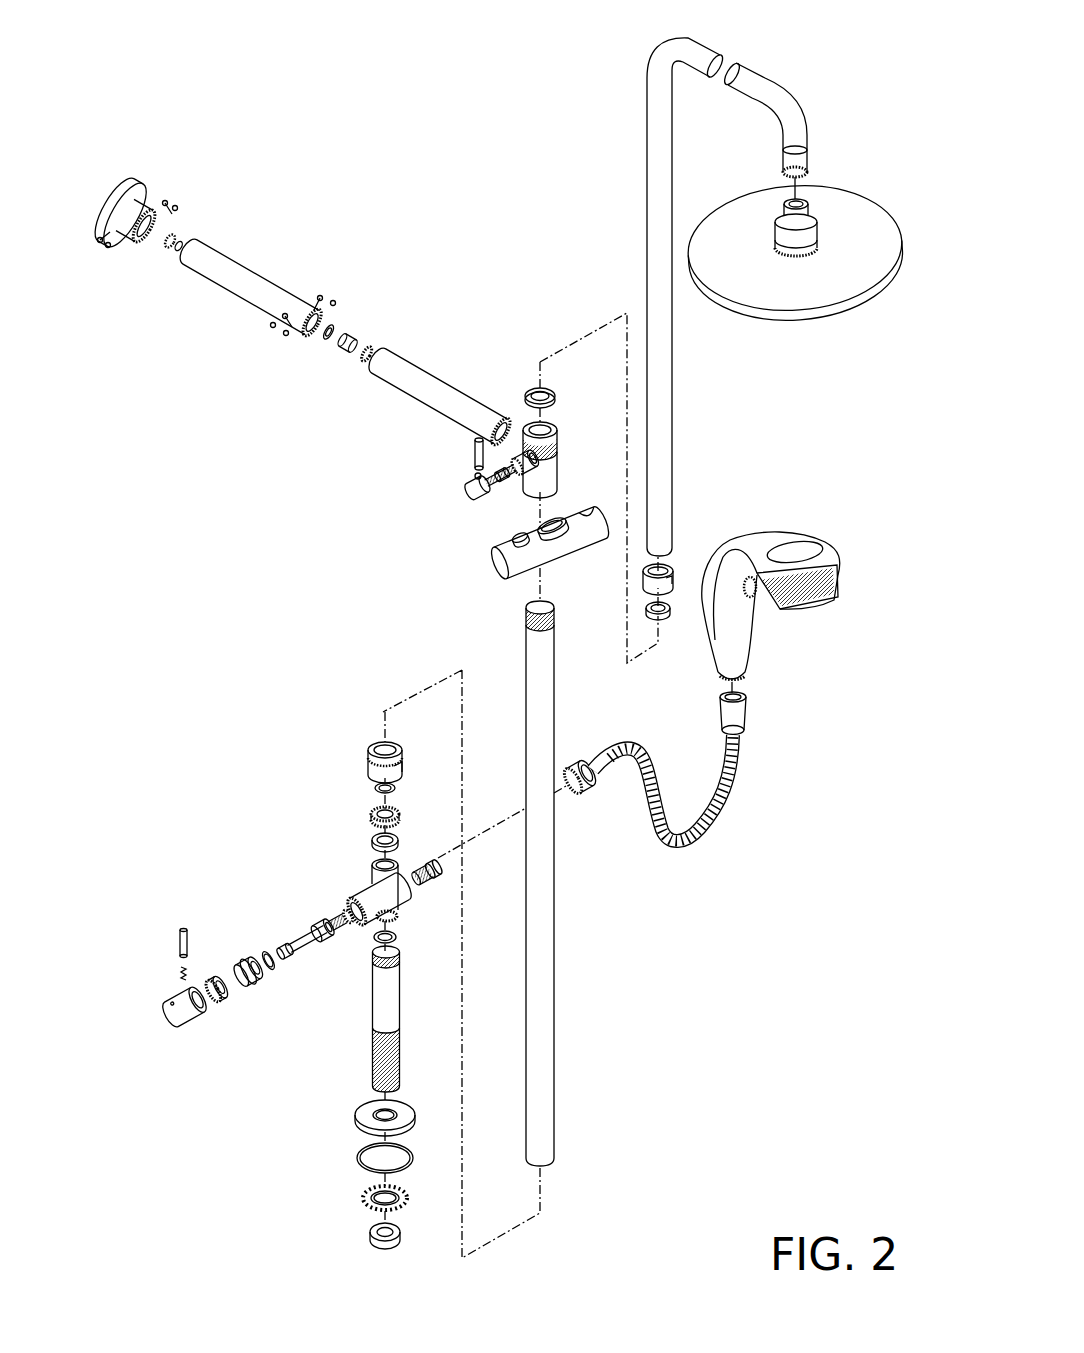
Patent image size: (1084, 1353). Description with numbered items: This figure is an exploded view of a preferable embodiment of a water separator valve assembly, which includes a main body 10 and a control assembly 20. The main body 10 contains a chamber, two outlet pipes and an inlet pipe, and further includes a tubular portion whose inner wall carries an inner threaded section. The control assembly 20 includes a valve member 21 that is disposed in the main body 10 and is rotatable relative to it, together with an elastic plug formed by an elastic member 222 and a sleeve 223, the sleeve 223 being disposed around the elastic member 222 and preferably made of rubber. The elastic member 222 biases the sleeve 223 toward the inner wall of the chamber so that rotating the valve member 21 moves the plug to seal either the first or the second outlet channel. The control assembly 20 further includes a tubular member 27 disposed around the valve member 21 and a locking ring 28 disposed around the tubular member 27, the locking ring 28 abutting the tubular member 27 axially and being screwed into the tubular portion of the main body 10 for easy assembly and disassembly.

The main body 10 is at (383, 913).
The control assembly 20 is at (258, 1031).
The valve member 21 is at (302, 942).
The tubular member 27 is at (248, 971).
The locking ring 28 is at (216, 989).
The elastic member 222 is at (337, 922).
The sleeve 223 is at (348, 917).